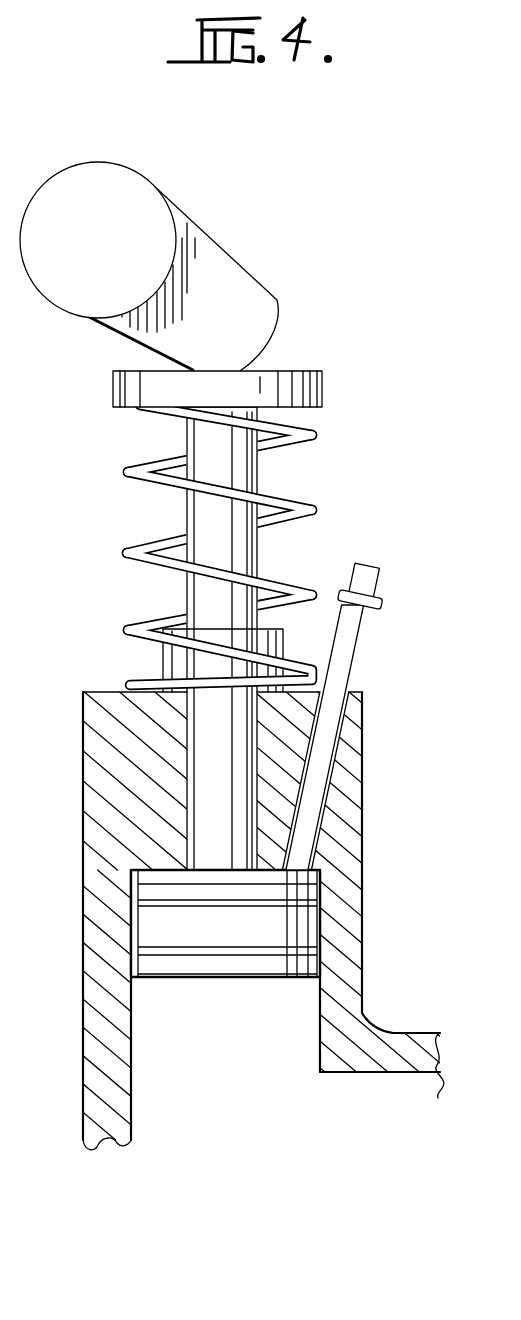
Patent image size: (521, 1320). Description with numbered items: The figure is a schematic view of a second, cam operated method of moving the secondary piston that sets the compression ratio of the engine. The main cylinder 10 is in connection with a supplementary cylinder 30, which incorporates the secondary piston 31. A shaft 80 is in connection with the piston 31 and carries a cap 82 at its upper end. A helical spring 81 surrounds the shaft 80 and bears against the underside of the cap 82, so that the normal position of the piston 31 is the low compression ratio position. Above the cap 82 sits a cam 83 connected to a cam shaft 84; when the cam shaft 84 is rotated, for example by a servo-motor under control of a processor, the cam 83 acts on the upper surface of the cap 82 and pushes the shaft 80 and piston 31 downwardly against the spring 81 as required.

The cylinder 10 is at (245, 1151).
The supplementary cylinder 30 is at (225, 1058).
The piston 31 is at (173, 922).
The shaft 80 is at (213, 511).
The helical spring 81 is at (130, 472).
The cap 82 is at (322, 379).
The cam 83 is at (217, 300).
The cam shaft 84 is at (130, 213).